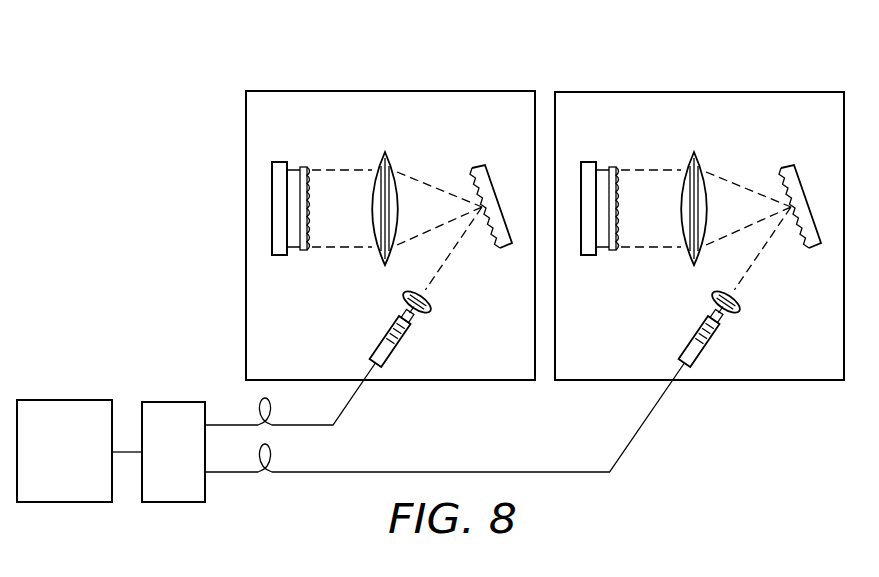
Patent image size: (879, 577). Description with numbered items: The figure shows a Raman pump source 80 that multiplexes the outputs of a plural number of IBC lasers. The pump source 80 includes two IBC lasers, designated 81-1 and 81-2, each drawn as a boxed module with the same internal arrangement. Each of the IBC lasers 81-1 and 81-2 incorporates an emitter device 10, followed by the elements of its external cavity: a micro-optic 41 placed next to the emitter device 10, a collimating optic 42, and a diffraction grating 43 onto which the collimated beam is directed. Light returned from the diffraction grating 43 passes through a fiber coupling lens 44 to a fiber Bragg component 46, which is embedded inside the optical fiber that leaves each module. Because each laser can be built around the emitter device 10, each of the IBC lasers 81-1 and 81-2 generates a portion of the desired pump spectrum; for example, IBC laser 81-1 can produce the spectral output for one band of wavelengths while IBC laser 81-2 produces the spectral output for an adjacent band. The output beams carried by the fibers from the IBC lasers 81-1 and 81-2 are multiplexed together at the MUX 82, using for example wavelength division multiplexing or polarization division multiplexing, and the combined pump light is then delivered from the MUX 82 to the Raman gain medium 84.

The pump source 80 is at (143, 113).
The IBC laser 81-1 is at (390, 91).
The IBC laser 81-2 is at (698, 92).
The emitter device 10 is at (272, 162).
The micro-optic 41 is at (305, 167).
The collimating optic 42 is at (385, 152).
The diffraction grating 43 is at (472, 168).
The fiber coupling lens 44 is at (436, 309).
The fiber Bragg component 46 is at (387, 333).
The MUX 82 is at (173, 502).
The Raman gain medium 84 is at (63, 502).